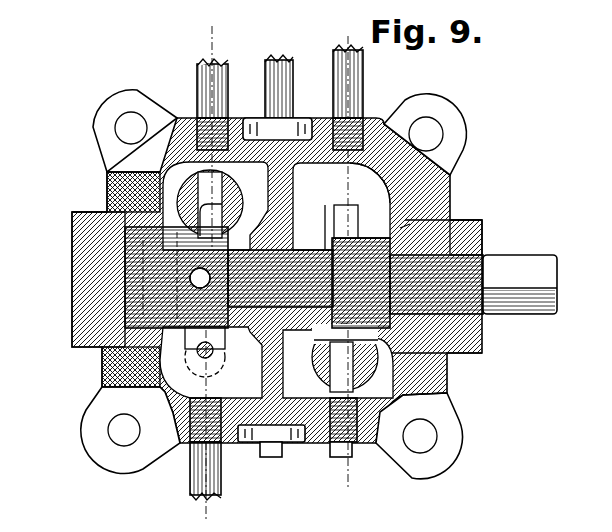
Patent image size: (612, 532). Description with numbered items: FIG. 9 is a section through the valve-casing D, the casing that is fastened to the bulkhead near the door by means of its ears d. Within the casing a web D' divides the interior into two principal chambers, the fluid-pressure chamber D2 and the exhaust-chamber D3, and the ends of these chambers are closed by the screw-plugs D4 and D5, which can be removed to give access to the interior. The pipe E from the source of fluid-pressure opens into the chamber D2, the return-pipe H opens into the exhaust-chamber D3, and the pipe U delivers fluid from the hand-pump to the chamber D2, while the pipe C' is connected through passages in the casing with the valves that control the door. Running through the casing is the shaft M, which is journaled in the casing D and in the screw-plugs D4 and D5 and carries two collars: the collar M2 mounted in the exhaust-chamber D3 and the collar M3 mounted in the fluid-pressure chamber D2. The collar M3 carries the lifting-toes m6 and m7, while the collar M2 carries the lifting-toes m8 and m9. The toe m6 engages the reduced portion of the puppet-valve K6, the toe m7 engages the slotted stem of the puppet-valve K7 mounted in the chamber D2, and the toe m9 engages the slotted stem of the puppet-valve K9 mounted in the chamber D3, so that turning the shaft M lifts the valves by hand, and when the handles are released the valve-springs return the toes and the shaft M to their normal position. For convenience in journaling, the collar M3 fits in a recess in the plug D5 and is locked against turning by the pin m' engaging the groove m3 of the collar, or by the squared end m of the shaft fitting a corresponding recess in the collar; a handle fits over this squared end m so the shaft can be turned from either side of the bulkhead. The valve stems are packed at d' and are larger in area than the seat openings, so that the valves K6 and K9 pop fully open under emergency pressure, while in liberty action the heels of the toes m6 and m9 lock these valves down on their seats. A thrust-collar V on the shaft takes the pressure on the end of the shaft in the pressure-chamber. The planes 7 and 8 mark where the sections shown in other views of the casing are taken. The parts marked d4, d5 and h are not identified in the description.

The valve-casing D is at (283, 280).
The ears d is at (296, 273).
The valve-stem packing d' is at (433, 281).
The bearing hub of casing d4 is at (451, 191).
The casing wall portion d5 is at (107, 172).
The web D' is at (341, 206).
The fluid-pressure chamber D2 is at (215, 206).
The exhaust-chamber D3 is at (370, 183).
The screw-plug D4 is at (447, 241).
The screw-plug D5 is at (72, 266).
The pipe E is at (213, 82).
The pipe C' is at (279, 268).
The return-pipe H is at (362, 78).
The bolt end / nut h is at (350, 457).
The pipe U is at (221, 472).
The thrust-collar V is at (393, 232).
The puppet-valve K6 is at (105, 387).
The puppet-valve K7 is at (107, 200).
The puppet-valve K9 is at (423, 373).
The squared end of shaft m is at (477, 272).
The pin m' is at (229, 275).
The groove m3 is at (201, 269).
The lifting-toe m6 is at (212, 357).
The lifting-toe m7 is at (72, 213).
The lifting-toe m8 is at (346, 221).
The lifting-toe m9 is at (437, 352).
The shaft M is at (280, 278).
The collar M2 is at (361, 283).
The collar M3 is at (150, 282).
The section plane 7 7 is at (300, 37).
The section plane 8 8 is at (152, 30).